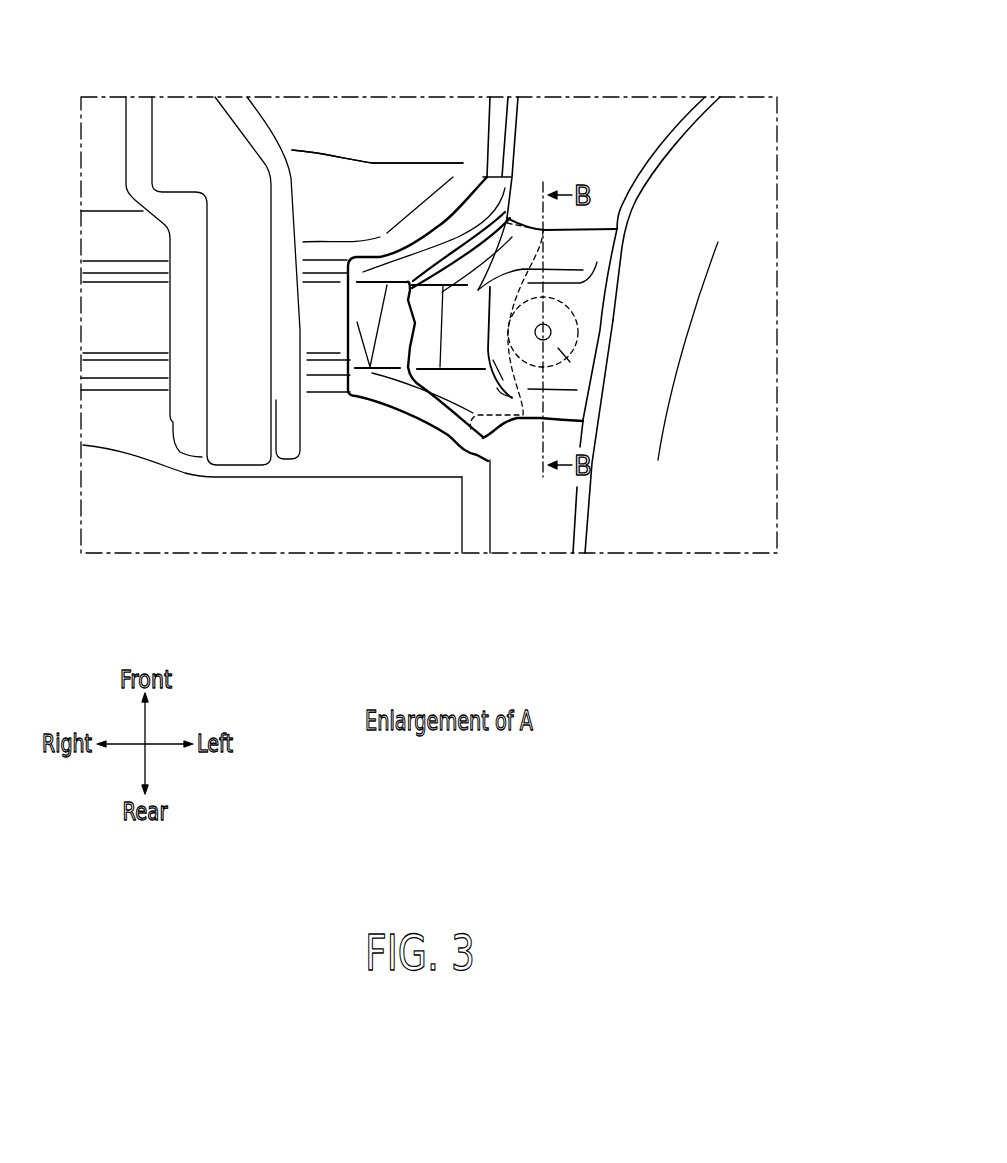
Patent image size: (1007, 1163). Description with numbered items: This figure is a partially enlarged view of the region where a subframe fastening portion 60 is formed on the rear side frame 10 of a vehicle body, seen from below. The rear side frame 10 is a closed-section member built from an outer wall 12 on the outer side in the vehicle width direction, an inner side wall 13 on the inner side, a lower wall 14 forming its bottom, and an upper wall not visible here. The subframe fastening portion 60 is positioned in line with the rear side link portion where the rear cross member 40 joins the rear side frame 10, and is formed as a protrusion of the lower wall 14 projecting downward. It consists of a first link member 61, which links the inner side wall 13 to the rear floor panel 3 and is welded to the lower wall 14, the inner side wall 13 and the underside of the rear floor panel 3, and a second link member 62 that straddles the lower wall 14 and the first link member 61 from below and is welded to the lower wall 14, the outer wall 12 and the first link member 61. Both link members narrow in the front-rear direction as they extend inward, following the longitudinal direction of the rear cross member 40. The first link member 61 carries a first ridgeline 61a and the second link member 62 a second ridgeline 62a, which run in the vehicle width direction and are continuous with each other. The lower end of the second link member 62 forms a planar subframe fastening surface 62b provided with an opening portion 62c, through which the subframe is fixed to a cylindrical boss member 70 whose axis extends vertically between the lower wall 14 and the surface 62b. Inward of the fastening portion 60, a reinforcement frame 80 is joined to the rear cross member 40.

The rear floor panel 3 is at (327, 448).
The rear side frame 10 is at (630, 124).
The outer wall 12 is at (625, 213).
The inner side wall 13 is at (500, 163).
The lower wall 14 is at (563, 130).
The rear cross member 40 is at (135, 372).
The subframe fastening portion 60 is at (606, 305).
The first link member 61 is at (380, 262).
The first ridgeline 61a is at (388, 367).
The second link member 62 is at (450, 263).
The second ridgeline 62a is at (460, 370).
The subframe fastening surface 62b is at (570, 373).
The opening portion 62c is at (552, 332).
The boss member 70 is at (593, 370).
The reinforcement frame 80 is at (242, 413).